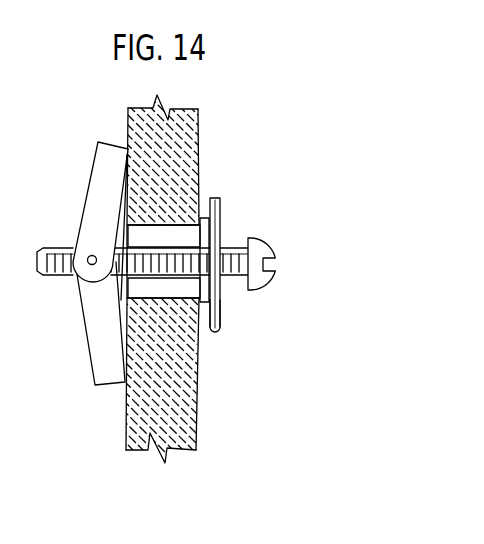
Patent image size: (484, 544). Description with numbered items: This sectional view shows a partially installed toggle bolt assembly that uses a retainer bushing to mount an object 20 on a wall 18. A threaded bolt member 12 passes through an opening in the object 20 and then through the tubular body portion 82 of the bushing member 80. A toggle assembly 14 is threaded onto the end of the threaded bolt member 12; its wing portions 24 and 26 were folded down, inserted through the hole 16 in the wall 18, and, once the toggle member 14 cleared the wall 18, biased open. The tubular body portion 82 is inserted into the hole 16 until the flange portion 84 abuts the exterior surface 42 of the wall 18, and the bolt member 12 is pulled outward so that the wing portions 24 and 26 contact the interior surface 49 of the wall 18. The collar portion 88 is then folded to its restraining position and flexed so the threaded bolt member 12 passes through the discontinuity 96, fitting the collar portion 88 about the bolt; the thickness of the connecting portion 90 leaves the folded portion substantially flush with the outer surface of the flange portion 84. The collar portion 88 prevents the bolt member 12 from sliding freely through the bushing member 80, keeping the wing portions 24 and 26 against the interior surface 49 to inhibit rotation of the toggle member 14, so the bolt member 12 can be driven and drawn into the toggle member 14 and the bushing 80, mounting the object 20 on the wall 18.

The threaded bolt member 12 is at (268, 245).
The toggle assembly 14 is at (86, 263).
The hole 16 is at (113, 291).
The wall 18 is at (200, 136).
The object 20 is at (236, 282).
The wing portion 24 is at (95, 178).
The wing portion 26 is at (93, 340).
The exterior surface 42 is at (197, 418).
The interior surface 49 is at (125, 415).
The bushing member 80 is at (172, 226).
The tubular body portion 82 is at (127, 232).
The flange portion 84 is at (205, 222).
The collar portion 88 is at (203, 290).
The connecting portion 90 is at (215, 315).
The discontinuity 96 is at (213, 231).